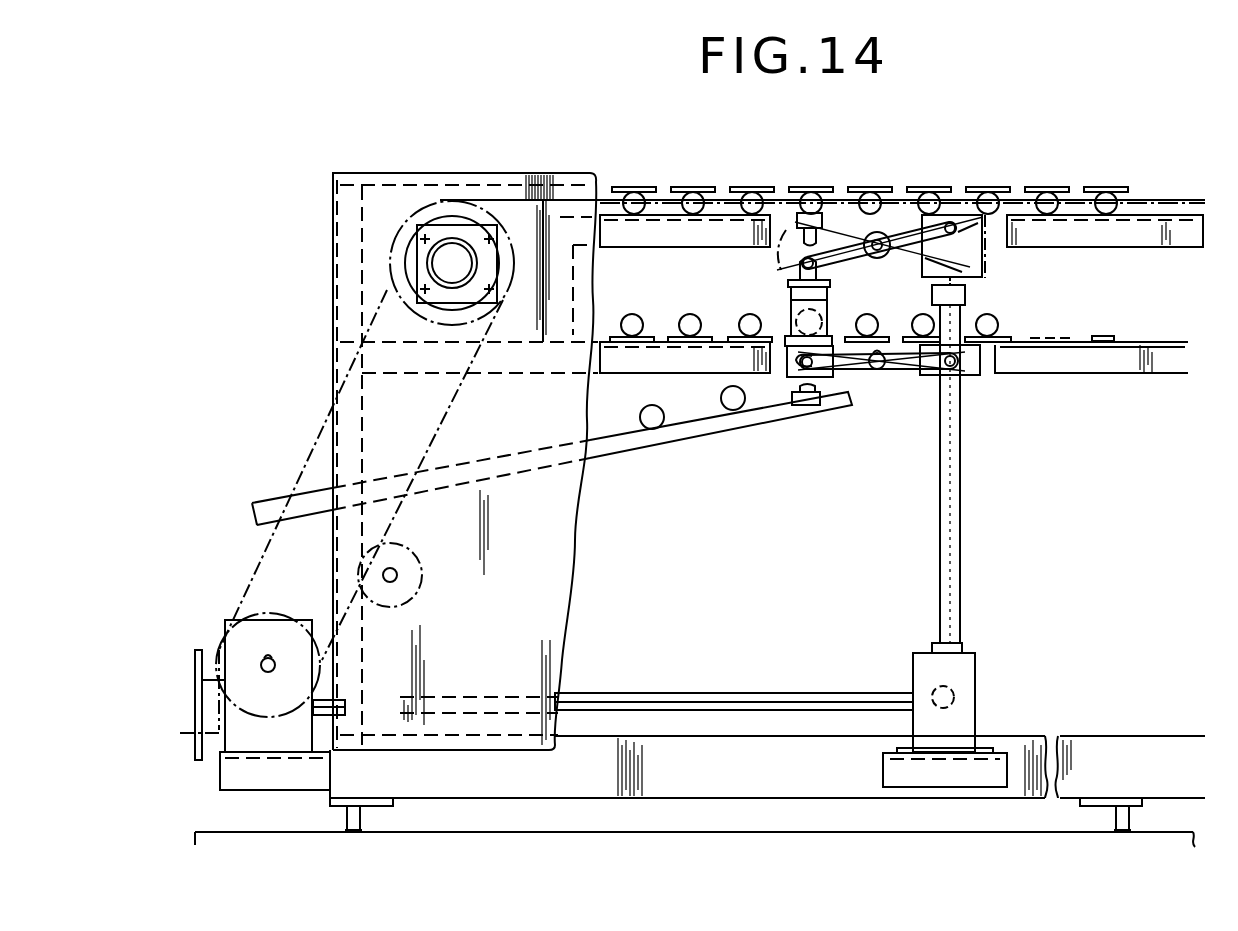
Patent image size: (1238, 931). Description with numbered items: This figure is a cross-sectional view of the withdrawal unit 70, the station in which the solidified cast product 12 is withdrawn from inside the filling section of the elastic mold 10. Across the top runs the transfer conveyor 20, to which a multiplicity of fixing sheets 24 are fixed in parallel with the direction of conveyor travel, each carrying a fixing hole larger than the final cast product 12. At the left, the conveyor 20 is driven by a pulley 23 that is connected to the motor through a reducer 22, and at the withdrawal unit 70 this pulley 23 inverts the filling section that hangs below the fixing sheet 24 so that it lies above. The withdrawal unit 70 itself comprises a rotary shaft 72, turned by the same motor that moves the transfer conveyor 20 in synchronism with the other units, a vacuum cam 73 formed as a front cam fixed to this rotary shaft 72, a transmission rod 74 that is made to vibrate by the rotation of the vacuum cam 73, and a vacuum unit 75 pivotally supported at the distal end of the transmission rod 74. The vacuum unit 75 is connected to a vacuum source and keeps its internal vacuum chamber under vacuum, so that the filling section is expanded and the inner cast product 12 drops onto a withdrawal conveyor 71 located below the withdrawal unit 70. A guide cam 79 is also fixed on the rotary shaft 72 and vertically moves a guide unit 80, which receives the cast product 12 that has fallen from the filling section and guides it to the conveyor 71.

The elastic mold 10 is at (632, 314).
The cast product 12 is at (735, 411).
The transfer conveyor 20 is at (712, 182).
The reducer 22 is at (245, 729).
The pulley 23 is at (455, 220).
The fixing sheet 24 is at (811, 188).
The withdrawal unit 70 is at (923, 178).
The withdrawal conveyor 71 is at (646, 440).
The rotary shaft 72 is at (957, 585).
The vacuum cam 73 is at (988, 212).
The transmission rod 74 is at (892, 210).
The vacuum unit 75 is at (796, 298).
The guide cam 79 is at (975, 375).
The guide unit 80 is at (792, 406).